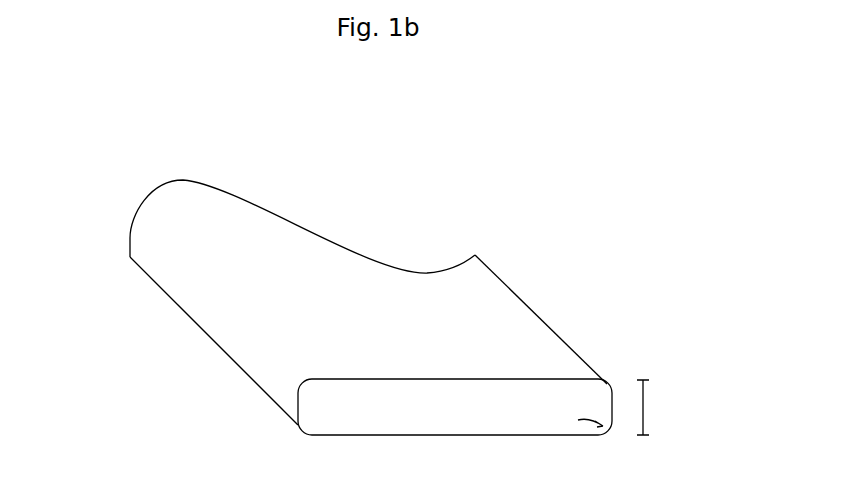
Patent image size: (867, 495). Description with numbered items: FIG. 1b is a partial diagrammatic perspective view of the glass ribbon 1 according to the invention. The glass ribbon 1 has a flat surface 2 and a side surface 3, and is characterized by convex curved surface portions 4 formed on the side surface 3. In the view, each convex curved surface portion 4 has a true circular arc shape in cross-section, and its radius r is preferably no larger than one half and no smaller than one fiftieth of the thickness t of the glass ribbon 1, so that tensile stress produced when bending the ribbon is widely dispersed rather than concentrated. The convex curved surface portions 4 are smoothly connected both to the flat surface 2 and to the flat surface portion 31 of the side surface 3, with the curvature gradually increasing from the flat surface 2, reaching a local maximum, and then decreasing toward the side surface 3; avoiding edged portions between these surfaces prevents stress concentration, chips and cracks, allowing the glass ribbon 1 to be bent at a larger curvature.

The glass ribbon 1 is at (410, 315).
The flat surface 2 is at (427, 310).
The side surface 3 is at (410, 406).
The convex curved surface portions 4 is at (610, 383).
The flat surface portion 31 is at (613, 415).